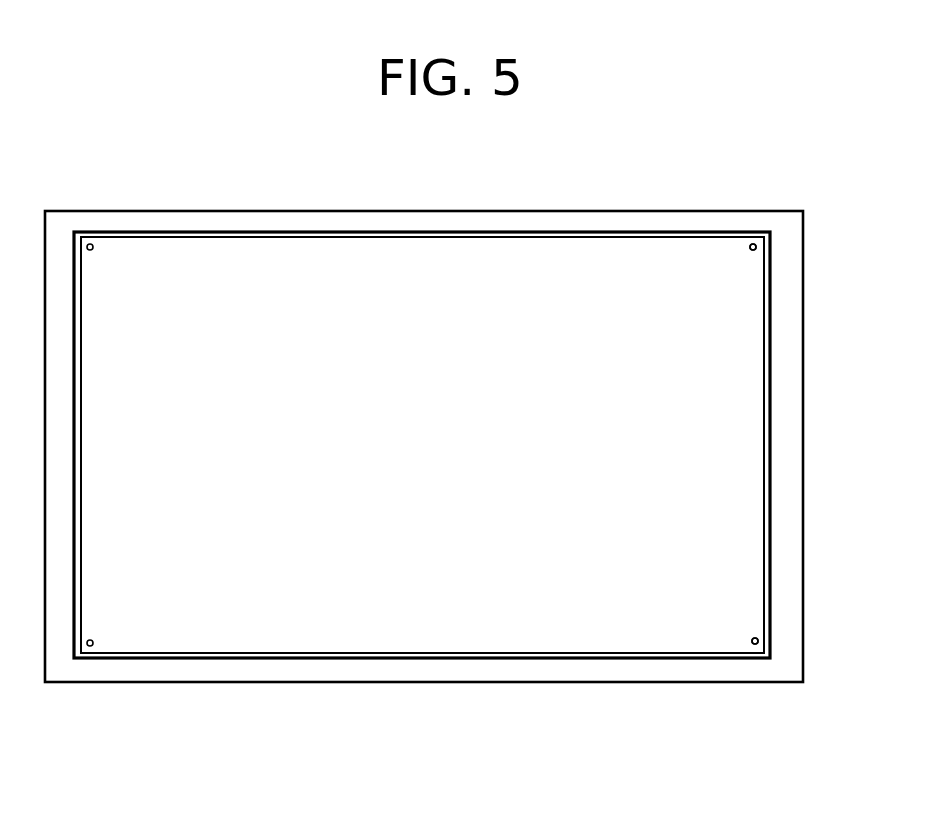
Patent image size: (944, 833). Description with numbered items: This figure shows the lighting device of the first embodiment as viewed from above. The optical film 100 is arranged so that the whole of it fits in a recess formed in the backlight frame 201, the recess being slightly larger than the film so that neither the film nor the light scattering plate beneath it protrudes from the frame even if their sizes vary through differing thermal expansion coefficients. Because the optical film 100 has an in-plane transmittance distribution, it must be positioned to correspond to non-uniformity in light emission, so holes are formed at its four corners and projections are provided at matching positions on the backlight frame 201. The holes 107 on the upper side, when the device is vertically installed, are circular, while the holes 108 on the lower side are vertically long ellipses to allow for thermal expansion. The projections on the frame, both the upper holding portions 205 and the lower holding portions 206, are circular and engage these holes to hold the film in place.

The optical film 100 is at (163, 237).
The backlight frame 201 is at (135, 682).
The upper circular holes 107 is at (753, 247).
The upper holding portions 205 is at (753, 244).
The lower holding portions 206 is at (758, 640).
The lower elliptical holes 108 is at (755, 645).